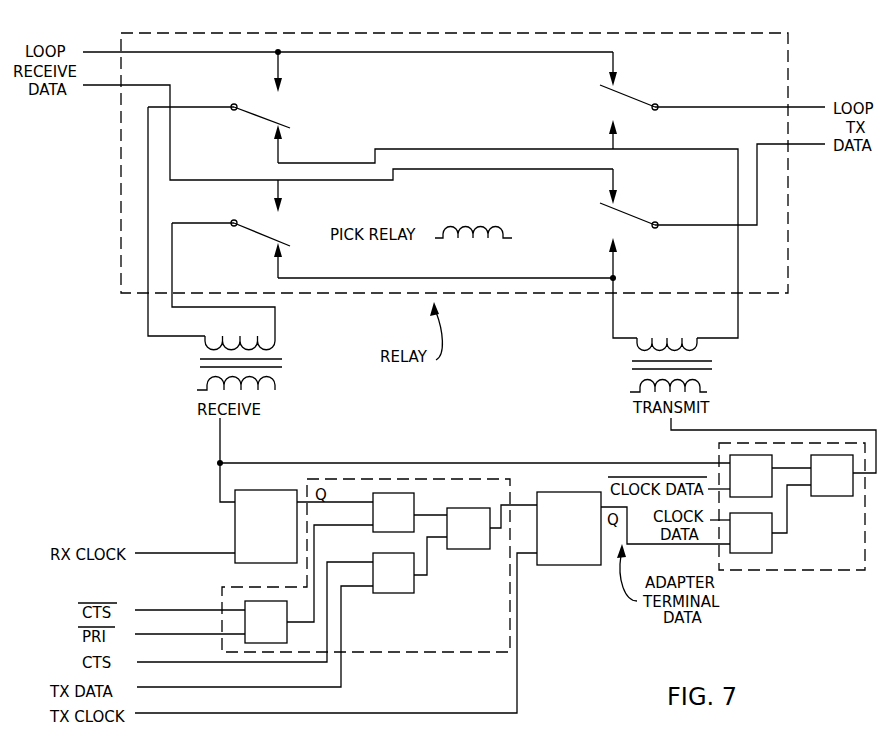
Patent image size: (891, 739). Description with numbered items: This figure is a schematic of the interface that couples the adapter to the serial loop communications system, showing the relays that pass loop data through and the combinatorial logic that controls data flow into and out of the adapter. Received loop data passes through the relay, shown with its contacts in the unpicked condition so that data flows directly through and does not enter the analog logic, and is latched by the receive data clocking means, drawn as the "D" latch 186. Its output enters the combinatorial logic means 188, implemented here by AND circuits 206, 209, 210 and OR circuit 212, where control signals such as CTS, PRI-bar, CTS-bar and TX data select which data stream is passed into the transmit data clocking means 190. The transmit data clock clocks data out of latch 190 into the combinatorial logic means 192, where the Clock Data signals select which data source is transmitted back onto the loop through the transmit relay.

The "D" latch 186 is at (235, 515).
The combinatorial logic means 188 is at (447, 654).
The transmit data clocking means 190 is at (565, 481).
The combinatorial logic means 192 is at (828, 572).
The AND circuit 206 is at (245, 604).
The AND circuit 209 is at (400, 593).
The AND circuit 210 is at (400, 494).
The OR circuit 212 is at (452, 549).